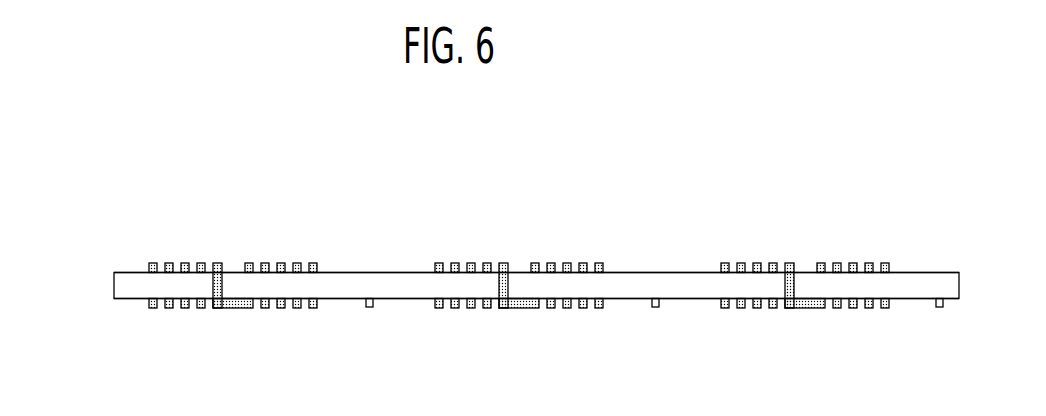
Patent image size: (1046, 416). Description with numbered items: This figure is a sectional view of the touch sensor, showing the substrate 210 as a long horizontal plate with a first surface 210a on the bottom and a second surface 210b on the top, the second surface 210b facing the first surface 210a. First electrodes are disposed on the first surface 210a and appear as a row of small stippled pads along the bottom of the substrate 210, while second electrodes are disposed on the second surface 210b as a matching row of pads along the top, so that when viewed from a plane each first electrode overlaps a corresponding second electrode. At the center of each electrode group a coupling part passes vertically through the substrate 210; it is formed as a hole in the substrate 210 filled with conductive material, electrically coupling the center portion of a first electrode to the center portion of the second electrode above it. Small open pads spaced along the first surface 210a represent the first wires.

The substrate 210 is at (113, 285).
The first surface 210a is at (124, 299).
The second surface 210b is at (124, 272).